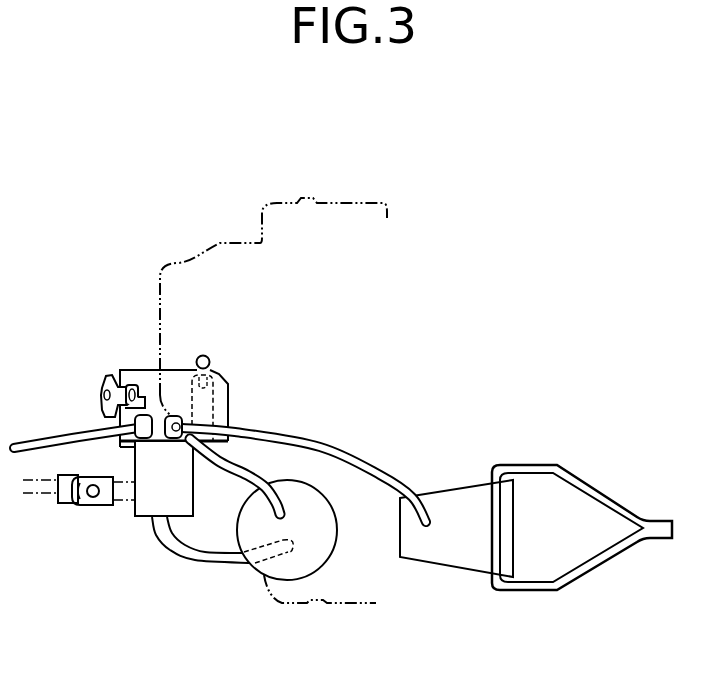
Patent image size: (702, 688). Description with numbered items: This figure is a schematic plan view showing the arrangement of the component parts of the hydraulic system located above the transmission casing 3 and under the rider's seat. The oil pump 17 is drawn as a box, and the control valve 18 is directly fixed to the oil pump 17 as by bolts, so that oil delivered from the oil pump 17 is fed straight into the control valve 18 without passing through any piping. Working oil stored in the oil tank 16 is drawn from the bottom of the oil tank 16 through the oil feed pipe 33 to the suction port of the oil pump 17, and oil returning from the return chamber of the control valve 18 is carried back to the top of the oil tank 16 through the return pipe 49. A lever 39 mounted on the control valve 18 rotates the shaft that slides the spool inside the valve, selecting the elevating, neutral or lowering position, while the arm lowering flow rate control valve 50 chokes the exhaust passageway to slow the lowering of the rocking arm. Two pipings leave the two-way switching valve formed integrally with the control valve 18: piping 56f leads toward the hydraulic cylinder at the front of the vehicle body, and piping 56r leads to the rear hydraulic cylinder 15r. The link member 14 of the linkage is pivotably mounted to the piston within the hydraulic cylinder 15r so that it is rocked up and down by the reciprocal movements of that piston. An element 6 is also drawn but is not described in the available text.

The transmission casing 3 is at (250, 243).
The control shaft joint 6 is at (50, 503).
The link member 14 is at (577, 478).
The rear hydraulic cylinder 15r is at (456, 551).
The oil tank 16 is at (310, 567).
The oil pump 17 is at (148, 507).
The control valve 18 is at (135, 382).
The oil feed pipe 33 is at (192, 548).
The lever 39 is at (208, 353).
The return pipe 49 is at (244, 447).
The arm lowering flow rate control valve 50 is at (104, 377).
The piping 56f is at (57, 437).
The piping 56r is at (325, 440).